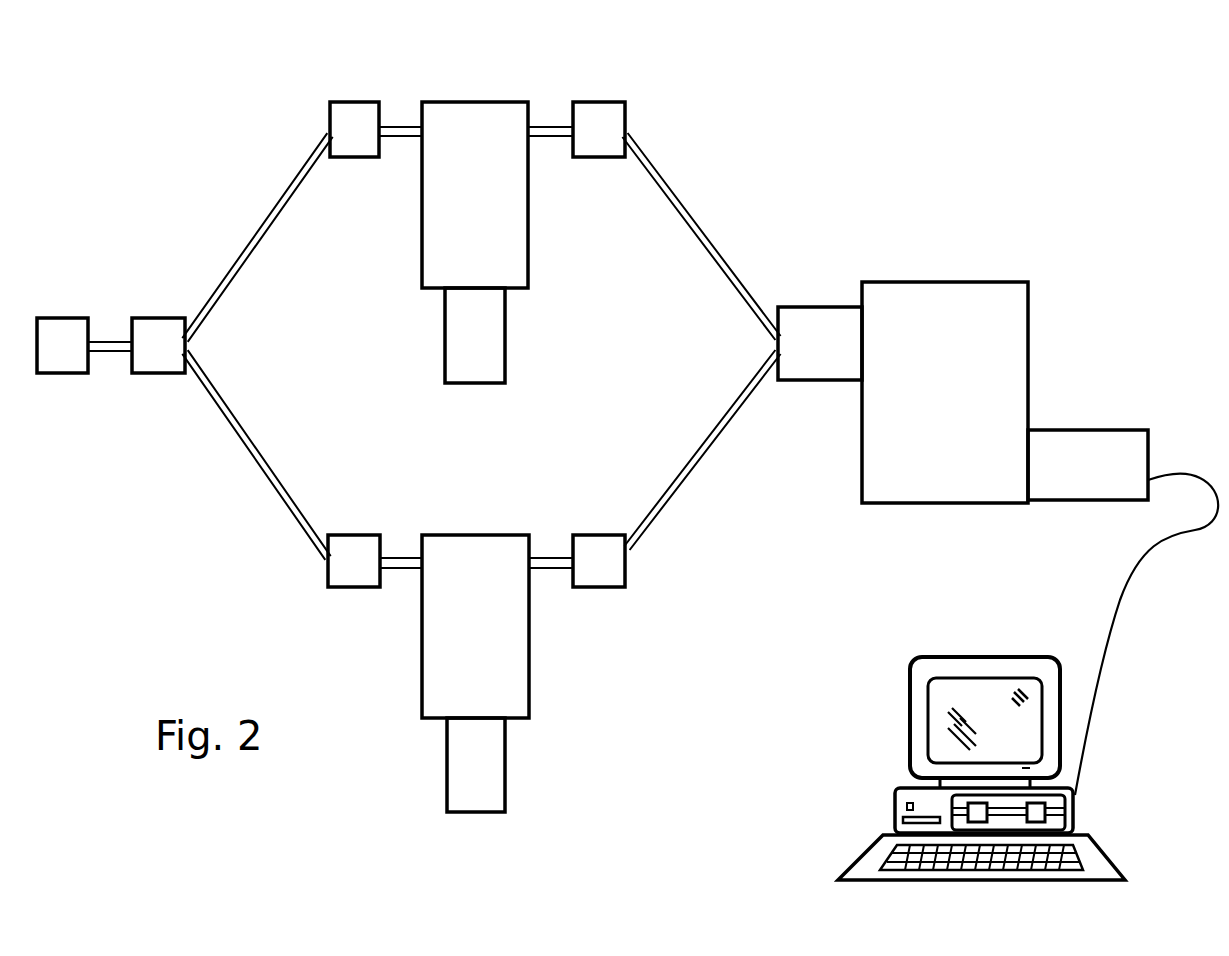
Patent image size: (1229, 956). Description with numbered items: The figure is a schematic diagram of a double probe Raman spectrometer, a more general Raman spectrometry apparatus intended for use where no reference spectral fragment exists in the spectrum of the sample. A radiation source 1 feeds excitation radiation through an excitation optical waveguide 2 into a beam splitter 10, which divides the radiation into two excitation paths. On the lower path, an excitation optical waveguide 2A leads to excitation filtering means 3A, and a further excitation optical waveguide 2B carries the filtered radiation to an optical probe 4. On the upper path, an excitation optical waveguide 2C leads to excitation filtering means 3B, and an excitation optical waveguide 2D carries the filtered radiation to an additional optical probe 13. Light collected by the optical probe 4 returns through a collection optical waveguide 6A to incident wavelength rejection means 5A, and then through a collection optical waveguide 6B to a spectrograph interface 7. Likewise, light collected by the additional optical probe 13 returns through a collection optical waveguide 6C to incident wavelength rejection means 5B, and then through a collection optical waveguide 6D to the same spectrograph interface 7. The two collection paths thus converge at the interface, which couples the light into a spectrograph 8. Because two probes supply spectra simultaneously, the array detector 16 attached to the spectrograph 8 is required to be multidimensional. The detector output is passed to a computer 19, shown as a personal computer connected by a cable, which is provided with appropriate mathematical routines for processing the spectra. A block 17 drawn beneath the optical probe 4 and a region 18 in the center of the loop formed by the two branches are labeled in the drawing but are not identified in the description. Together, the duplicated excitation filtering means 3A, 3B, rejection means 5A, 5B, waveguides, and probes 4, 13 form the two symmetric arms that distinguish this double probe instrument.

The radiation source 1 is at (67, 362).
The excitation optical waveguide 2 is at (112, 343).
The beam splitter 10 is at (160, 338).
The excitation optical waveguide 2A is at (257, 467).
The excitation optical waveguide 2B is at (402, 556).
The excitation optical waveguide 2C is at (290, 198).
The excitation optical waveguide 2D is at (400, 124).
The excitation filtering means 3A is at (357, 573).
The excitation filtering means 3B is at (353, 123).
The optical probe 4 is at (490, 648).
The incident wavelength rejection means 5A is at (610, 575).
The incident wavelength rejection means 5B is at (606, 124).
The collection optical waveguide 6A is at (558, 553).
The collection optical waveguide 6B is at (720, 443).
The collection optical waveguide 6C is at (547, 120).
The collection optical waveguide 6D is at (706, 252).
The spectrograph interface 7 is at (825, 325).
The spectrograph 8 is at (1005, 330).
The optical probe 13 is at (495, 207).
The array detector 16 is at (1105, 460).
The sub-unit 17 is at (478, 793).
The ring network 18 is at (456, 441).
The computer 19 is at (893, 806).